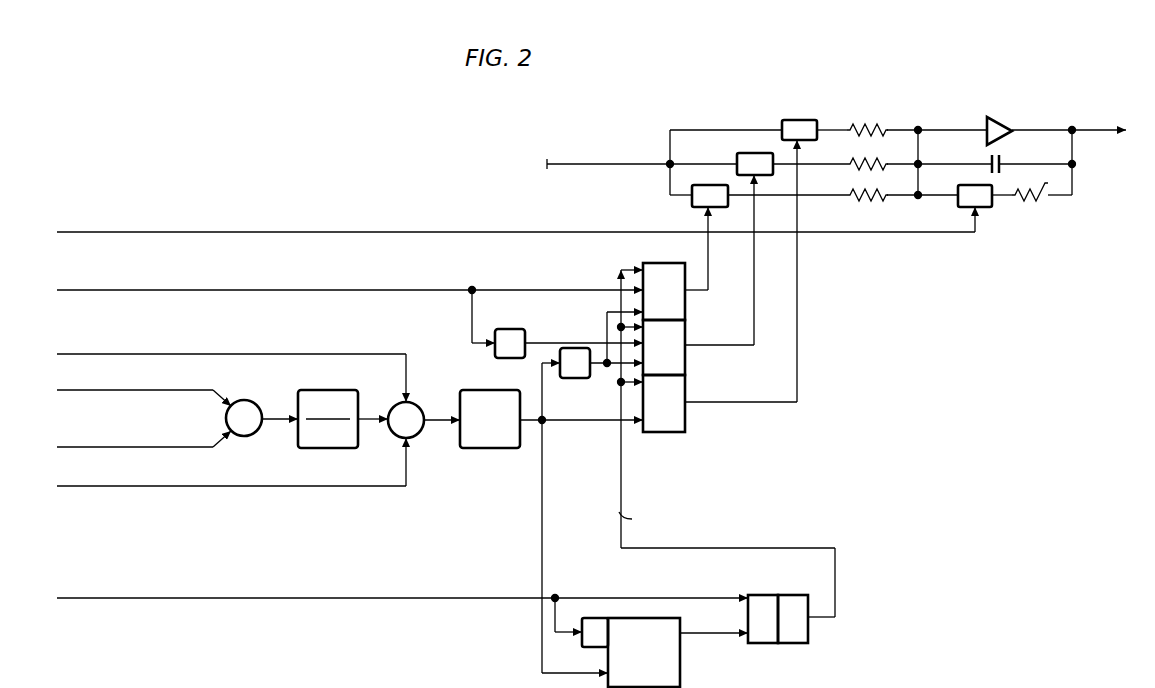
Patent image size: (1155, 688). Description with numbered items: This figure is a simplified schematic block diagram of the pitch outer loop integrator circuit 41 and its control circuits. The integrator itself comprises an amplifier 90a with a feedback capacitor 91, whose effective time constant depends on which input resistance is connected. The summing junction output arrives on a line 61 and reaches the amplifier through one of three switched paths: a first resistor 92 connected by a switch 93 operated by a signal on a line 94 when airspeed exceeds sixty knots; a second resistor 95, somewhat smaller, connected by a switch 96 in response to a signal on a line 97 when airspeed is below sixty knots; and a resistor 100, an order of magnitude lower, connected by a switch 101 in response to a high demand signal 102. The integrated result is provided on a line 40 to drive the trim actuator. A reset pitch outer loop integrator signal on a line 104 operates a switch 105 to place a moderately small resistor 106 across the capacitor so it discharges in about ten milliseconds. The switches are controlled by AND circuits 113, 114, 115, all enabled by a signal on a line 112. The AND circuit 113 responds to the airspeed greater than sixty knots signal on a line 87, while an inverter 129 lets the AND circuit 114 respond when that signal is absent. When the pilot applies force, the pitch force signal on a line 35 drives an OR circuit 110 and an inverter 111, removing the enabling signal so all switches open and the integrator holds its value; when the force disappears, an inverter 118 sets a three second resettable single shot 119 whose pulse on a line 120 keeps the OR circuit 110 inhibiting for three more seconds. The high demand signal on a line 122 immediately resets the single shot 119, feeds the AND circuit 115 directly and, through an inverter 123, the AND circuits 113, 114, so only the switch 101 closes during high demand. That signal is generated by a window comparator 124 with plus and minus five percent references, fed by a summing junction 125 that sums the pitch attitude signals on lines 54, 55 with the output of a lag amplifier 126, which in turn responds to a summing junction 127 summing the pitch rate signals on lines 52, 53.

The pitch outer loop integrator circuit 41 is at (947, 97).
The line 40 is at (1094, 130).
The line 61 is at (570, 164).
The switch 101 is at (784, 121).
The switch 96 is at (739, 155).
The switch 93 is at (695, 188).
The switch 105 is at (959, 187).
The resistor 100 is at (864, 127).
The second resistor 95 is at (861, 161).
The first resistor 92 is at (861, 193).
The resistor 106 is at (1030, 191).
The feedback capacitor 91 is at (1001, 158).
The amplifier 90a is at (1000, 125).
The line 104 is at (262, 232).
The line 87 is at (250, 290).
The line 54 is at (197, 354).
The line 52 is at (195, 390).
The line 53 is at (193, 450).
The line 55 is at (195, 488).
The summing junction 127 is at (251, 403).
The lag amplifier 126 is at (309, 391).
The summing junction 125 is at (418, 408).
The window comparator 124 is at (472, 390).
The inverter 129 is at (500, 330).
The inverter 123 is at (572, 380).
The AND circuit 113 is at (685, 311).
The AND circuit 114 is at (685, 366).
The AND circuit 115 is at (685, 423).
The line 94 is at (708, 283).
The line 97 is at (754, 341).
The signal 102 is at (797, 396).
The line 112 is at (619, 506).
The line 35 is at (190, 600).
The line 122 is at (542, 528).
The inverter 118 is at (589, 619).
The 3 second resettable single shot 119 is at (678, 625).
The line 120 is at (700, 636).
The OR circuit 110 is at (772, 594).
The inverter 111 is at (808, 594).